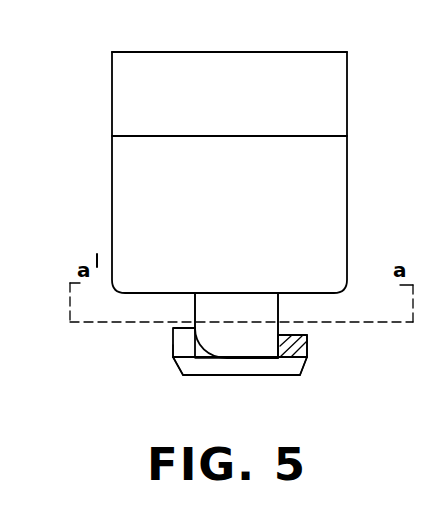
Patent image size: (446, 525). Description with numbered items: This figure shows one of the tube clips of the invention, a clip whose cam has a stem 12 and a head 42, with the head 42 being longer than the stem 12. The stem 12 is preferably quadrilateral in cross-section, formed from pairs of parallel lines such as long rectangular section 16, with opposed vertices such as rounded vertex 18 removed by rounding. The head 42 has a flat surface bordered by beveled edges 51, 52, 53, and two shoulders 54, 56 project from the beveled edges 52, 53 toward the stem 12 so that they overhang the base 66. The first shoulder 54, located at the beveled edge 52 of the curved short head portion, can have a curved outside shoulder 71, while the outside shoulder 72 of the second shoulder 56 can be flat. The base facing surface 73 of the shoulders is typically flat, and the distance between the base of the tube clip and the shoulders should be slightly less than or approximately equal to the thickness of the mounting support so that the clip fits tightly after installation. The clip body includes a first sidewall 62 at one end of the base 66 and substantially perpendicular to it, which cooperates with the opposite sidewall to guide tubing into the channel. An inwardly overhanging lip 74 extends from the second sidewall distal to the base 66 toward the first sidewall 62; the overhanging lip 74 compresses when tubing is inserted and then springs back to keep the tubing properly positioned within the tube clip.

The stem 12 is at (279, 320).
The long rectangular section 16 is at (233, 315).
The rounded vertex 18 is at (183, 372).
The head 42 is at (213, 370).
The beveled edge 51 is at (245, 370).
The beveled edge 52 is at (303, 375).
The beveled edge 53 is at (177, 365).
The first shoulder 54 is at (310, 345).
The second shoulder 56 is at (173, 340).
The first sidewall 62 is at (140, 192).
The base 66 is at (285, 342).
The outside shoulder 71 is at (307, 352).
The outside shoulder 72 is at (173, 355).
The base facing surface 73 is at (285, 343).
The overhanging lip 74 is at (275, 82).